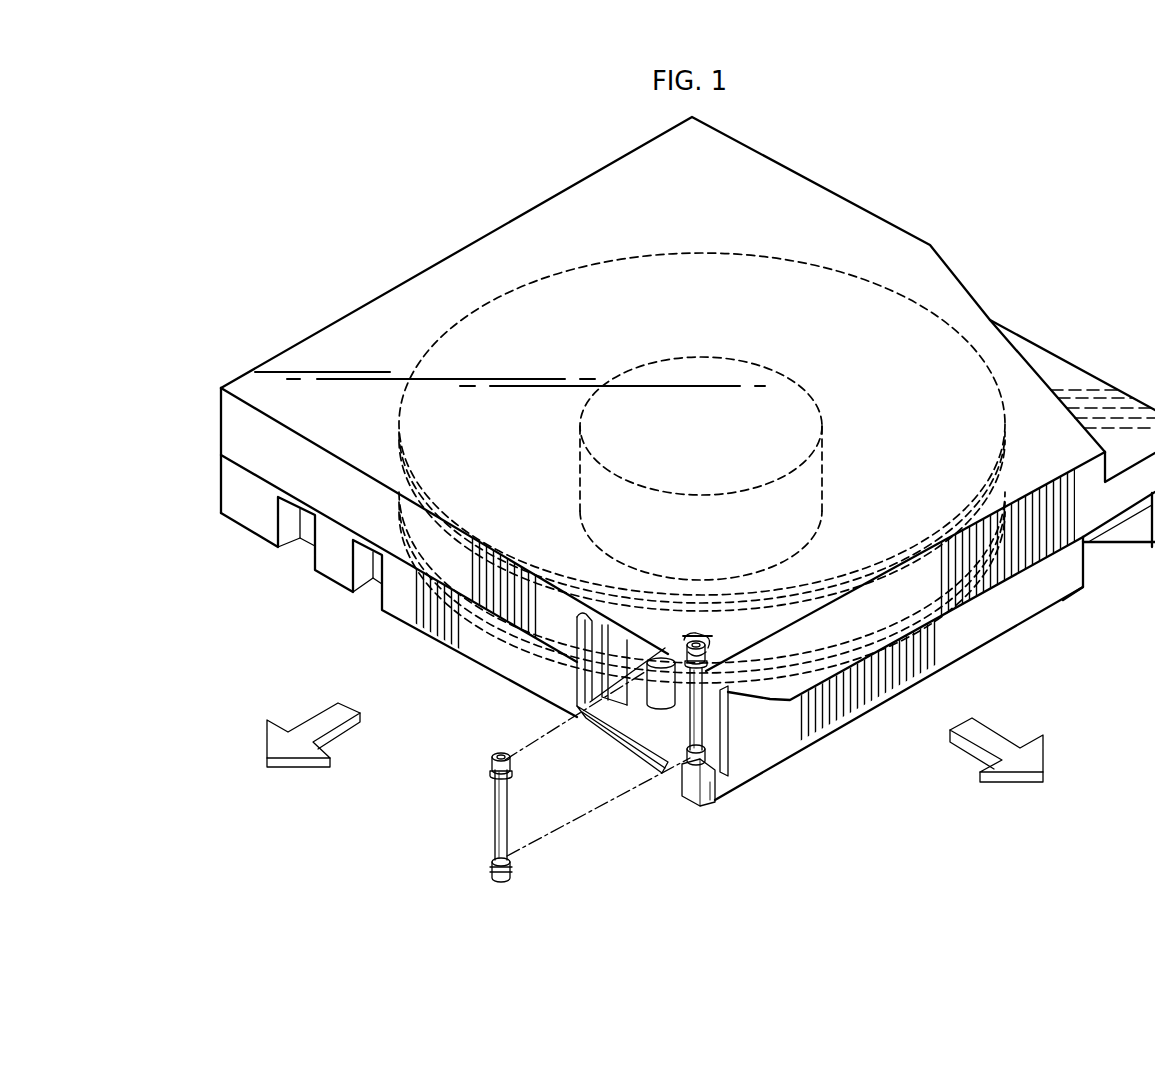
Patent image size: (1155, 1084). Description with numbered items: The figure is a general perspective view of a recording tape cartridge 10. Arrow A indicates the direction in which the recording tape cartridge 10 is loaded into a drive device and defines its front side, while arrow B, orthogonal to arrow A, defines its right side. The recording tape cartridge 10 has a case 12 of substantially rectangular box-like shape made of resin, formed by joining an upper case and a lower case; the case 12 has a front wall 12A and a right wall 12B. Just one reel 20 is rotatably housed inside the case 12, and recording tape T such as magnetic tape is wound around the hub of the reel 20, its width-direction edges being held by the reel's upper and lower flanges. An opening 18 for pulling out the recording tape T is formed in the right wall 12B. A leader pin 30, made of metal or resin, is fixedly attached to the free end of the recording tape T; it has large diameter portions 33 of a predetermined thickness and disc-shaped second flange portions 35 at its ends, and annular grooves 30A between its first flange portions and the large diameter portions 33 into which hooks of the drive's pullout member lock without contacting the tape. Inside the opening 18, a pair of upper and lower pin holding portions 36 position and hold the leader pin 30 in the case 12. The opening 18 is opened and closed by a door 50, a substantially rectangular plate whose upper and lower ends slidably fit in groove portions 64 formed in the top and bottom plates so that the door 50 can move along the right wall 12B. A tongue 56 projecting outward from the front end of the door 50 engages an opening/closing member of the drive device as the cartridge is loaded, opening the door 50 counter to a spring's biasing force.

The recording tape cartridge 10 is at (940, 215).
The case 12 is at (1067, 360).
The front wall 12A is at (995, 615).
The right wall 12B is at (335, 567).
The reel 20 is at (699, 257).
The opening 18 is at (580, 712).
The leader pin 30 is at (707, 710).
The annular grooves 30A is at (492, 782).
The large diameter portions 33 is at (492, 756).
The second flange portions 35 is at (700, 648).
The pin holding portions 36 is at (688, 637).
The door 50 is at (581, 693).
The tongue 56 is at (580, 686).
The groove portions 64 is at (662, 735).
The recording tape T is at (578, 817).
The arrow A is at (990, 737).
The arrow B is at (325, 720).